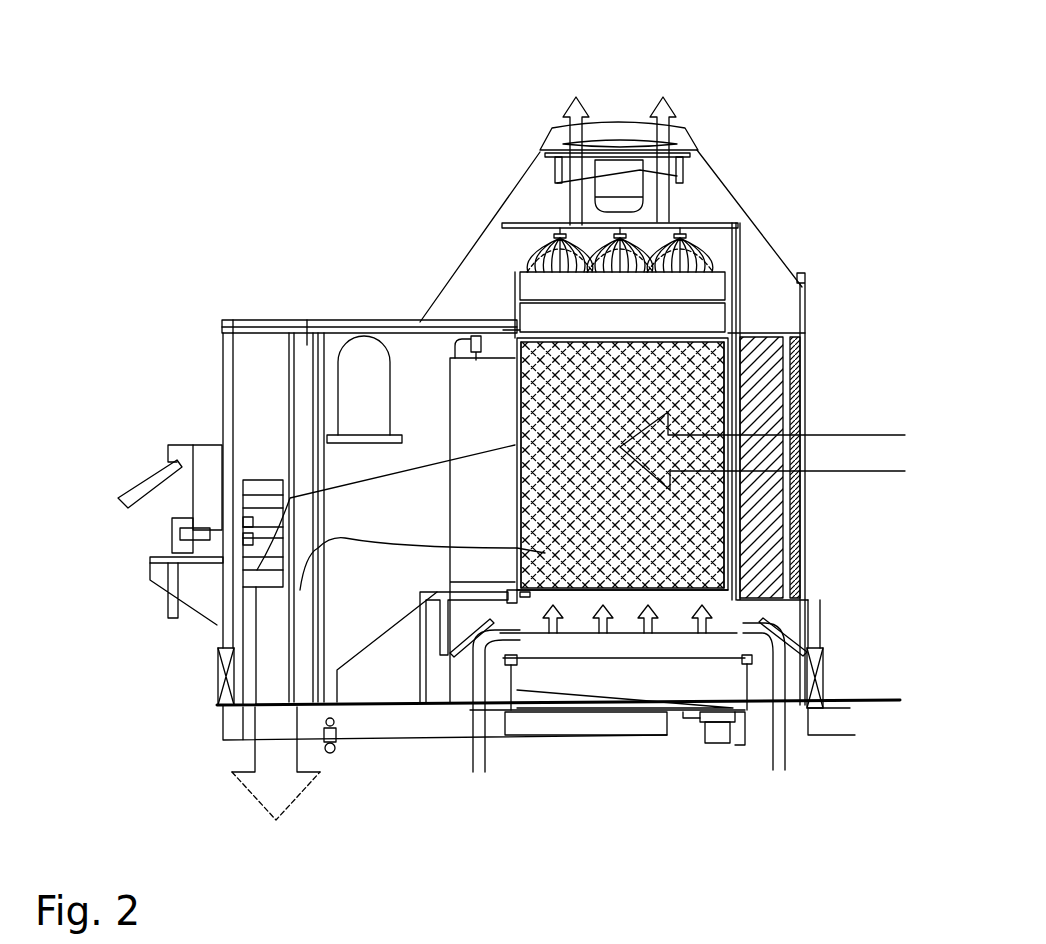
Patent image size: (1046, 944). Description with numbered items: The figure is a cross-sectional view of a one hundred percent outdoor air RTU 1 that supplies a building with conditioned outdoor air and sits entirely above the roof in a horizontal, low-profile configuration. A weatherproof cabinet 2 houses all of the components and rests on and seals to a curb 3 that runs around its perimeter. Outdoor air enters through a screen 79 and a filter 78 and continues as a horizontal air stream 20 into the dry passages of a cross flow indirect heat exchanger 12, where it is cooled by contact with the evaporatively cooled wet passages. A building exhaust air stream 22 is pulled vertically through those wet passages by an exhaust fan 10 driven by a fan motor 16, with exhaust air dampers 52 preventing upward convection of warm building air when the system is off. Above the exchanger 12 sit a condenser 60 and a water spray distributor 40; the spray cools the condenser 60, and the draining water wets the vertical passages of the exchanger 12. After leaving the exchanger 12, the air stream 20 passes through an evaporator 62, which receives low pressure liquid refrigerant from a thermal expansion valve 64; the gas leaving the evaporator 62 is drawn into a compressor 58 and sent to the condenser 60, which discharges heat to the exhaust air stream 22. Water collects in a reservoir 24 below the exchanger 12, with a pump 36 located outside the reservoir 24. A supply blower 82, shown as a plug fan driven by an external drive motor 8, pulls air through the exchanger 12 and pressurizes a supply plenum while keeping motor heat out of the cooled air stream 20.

The RTU 1 is at (466, 156).
The cabinet 2 is at (283, 327).
The curb 3 is at (215, 693).
The drive motor 8 is at (187, 537).
The exhaust fan 10 is at (627, 177).
The cross flow indirect heat exchanger 12 is at (628, 447).
The fan motor 16 is at (622, 165).
The horizontal air stream 20 is at (568, 631).
The building exhaust air stream 22 is at (629, 435).
The reservoir 24 is at (626, 685).
The pump 36 is at (720, 740).
The water spray distributor 40 is at (680, 233).
The exhaust air dampers 52 is at (495, 633).
The compressor 58 is at (350, 400).
The condenser 60 is at (540, 320).
The evaporator 62 is at (468, 412).
The thermal expansion valve 64 is at (477, 337).
The filter 78 is at (762, 333).
The screen 79 is at (802, 357).
The supply blower 82 is at (253, 517).